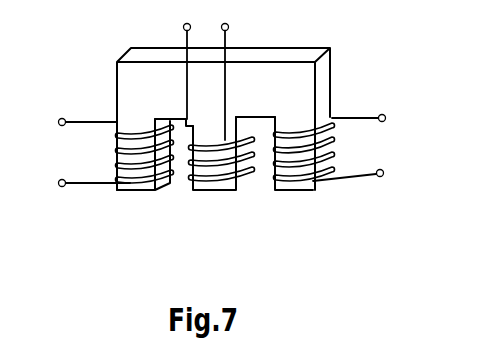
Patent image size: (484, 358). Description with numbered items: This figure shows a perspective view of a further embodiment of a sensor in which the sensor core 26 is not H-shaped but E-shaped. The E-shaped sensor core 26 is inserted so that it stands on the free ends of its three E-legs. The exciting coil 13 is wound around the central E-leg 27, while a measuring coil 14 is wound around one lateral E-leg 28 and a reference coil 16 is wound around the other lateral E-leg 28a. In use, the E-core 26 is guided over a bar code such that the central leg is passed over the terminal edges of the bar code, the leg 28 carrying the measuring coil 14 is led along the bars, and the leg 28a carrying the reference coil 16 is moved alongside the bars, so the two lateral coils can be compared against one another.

The sensor core 26 is at (326, 73).
The measuring coil 14 is at (127, 115).
The reference coil 16 is at (326, 113).
The exciting coil 13 is at (235, 186).
The lateral E-leg 28 is at (130, 190).
The central E-leg 27 is at (207, 190).
The lateral E-leg 28a is at (298, 193).